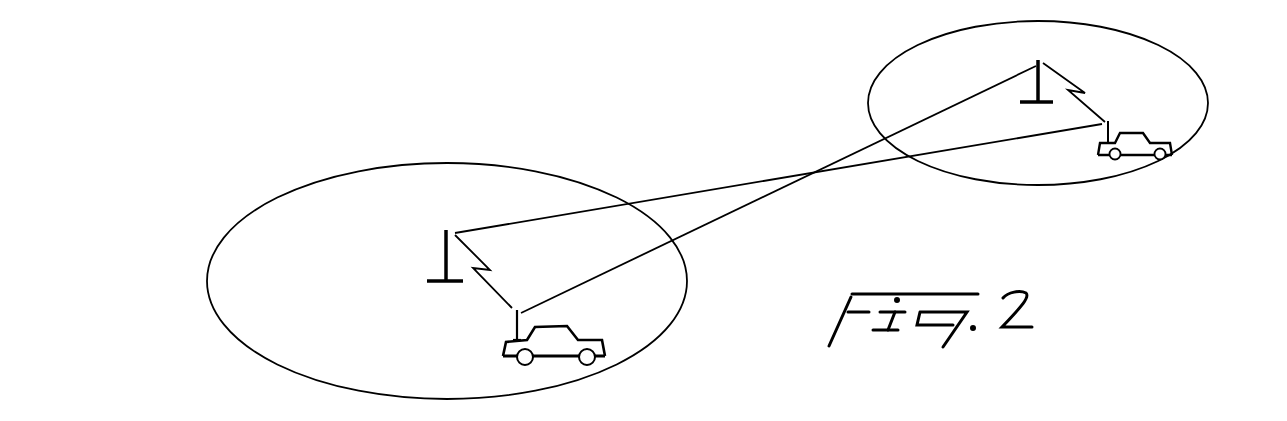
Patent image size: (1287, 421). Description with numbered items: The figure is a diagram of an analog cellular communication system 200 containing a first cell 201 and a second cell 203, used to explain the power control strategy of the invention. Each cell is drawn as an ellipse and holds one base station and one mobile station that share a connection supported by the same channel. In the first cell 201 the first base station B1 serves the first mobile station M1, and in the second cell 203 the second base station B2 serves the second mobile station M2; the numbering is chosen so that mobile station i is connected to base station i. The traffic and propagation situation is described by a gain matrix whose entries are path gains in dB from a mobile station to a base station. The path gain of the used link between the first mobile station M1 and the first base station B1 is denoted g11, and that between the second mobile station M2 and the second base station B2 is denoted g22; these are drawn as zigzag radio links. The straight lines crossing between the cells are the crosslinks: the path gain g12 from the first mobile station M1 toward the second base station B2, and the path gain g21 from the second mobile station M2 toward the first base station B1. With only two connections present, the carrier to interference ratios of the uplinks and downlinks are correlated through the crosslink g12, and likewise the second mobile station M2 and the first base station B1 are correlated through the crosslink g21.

The analog cellular communication system 200 is at (713, 118).
The first cell 201 is at (222, 240).
The second cell 203 is at (1197, 73).
The first base station B1 is at (437, 256).
The second base station B2 is at (1028, 97).
The first mobile station M1 is at (560, 352).
The second mobile station M2 is at (1148, 150).
The path gain of used link g11 is at (501, 291).
The crosslink path gain g12 is at (703, 192).
The crosslink path gain g21 is at (735, 213).
The path gain of used link g22 is at (1088, 89).